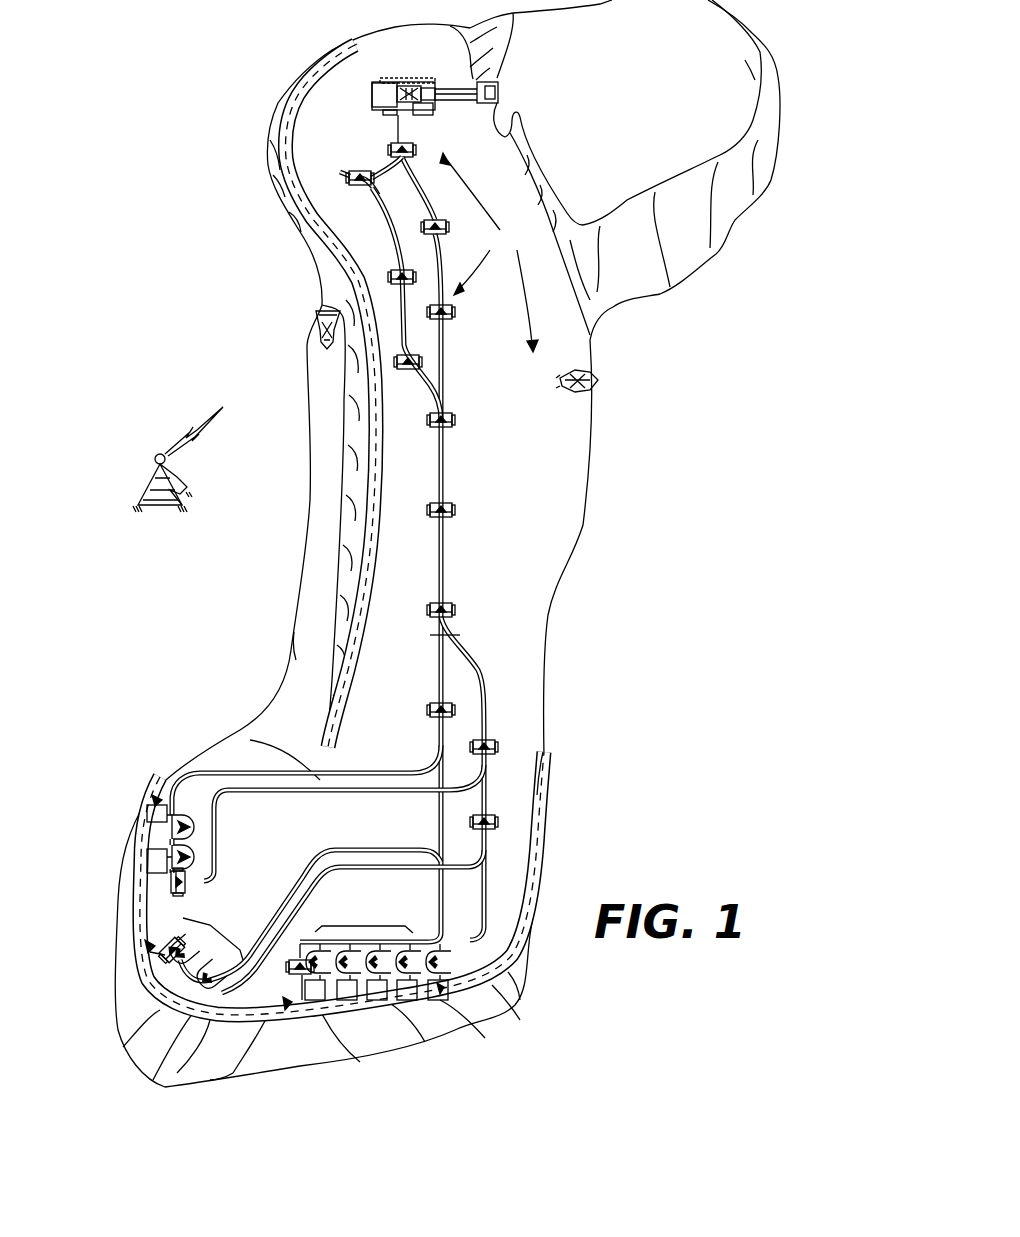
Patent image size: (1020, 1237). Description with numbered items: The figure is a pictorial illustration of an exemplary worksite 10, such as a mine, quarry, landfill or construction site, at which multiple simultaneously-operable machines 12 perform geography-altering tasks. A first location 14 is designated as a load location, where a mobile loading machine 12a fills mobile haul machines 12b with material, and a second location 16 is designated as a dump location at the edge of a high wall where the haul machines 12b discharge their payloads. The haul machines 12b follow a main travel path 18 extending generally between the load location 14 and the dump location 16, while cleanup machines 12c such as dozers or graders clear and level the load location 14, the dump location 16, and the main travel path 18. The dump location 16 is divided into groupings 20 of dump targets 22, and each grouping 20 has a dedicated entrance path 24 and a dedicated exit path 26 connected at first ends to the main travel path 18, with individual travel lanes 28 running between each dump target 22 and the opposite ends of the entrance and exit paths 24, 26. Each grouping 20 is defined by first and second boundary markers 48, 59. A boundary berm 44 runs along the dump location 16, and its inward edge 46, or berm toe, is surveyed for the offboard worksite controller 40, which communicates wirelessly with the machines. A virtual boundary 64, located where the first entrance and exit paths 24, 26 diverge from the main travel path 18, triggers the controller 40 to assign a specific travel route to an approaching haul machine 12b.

The worksite 10 is at (630, 838).
The machines 12 is at (490, 230).
The mobile loading machine 12a is at (373, 79).
The mobile haul machines 12b is at (452, 420).
The cleanup machines 12c is at (320, 309).
The first location 14 is at (314, 113).
The second location 16 is at (286, 838).
The main travel path 18 is at (447, 552).
The groupings 20 is at (215, 850).
The dump targets 22 is at (148, 840).
The entrance path 24 is at (332, 793).
The exit path 26 is at (353, 773).
The travel lanes 28 is at (185, 792).
The offboard worksite controller 40 is at (157, 458).
The boundary berm 44 is at (537, 860).
The inward edge 46 is at (537, 797).
The first boundary marker 48 is at (150, 898).
The second boundary marker 59 is at (158, 792).
The virtual boundary 64 is at (452, 630).